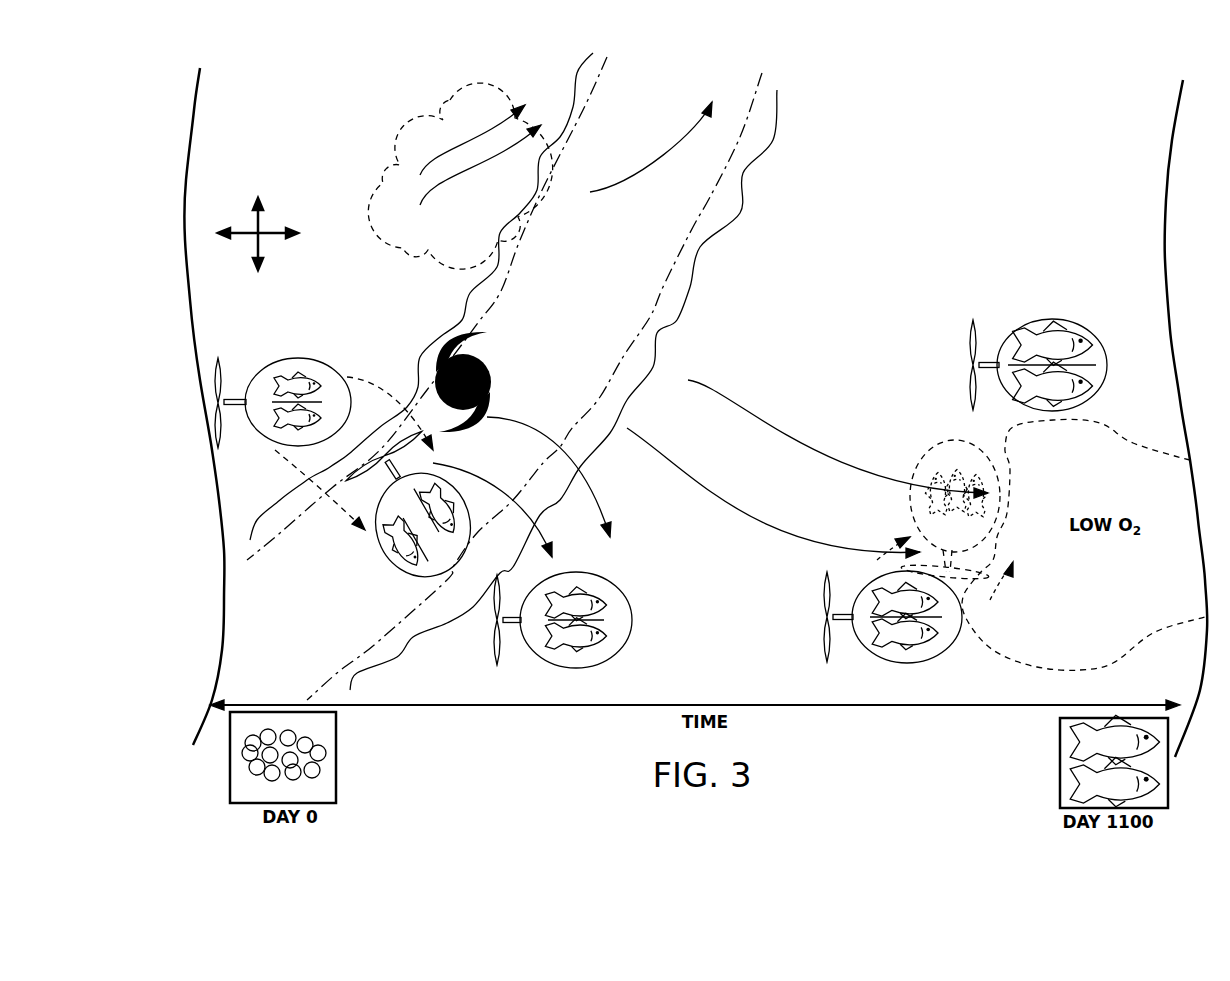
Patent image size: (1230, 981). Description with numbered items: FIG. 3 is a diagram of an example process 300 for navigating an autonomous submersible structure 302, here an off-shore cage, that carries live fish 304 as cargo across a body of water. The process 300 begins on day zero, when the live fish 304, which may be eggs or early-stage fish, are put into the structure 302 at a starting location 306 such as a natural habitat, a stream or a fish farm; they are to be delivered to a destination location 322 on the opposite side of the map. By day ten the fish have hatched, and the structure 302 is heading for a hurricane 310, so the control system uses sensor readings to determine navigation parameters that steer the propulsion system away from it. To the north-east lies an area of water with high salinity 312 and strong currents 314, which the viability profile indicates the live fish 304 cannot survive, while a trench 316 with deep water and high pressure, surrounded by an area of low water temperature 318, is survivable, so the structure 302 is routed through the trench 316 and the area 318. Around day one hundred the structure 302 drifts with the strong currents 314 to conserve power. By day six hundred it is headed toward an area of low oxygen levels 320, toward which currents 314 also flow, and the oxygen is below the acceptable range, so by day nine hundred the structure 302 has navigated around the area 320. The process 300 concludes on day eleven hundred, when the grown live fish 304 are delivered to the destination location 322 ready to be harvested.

The process 300 is at (322, 148).
The structure 302 is at (292, 357).
The live fish 304 is at (320, 417).
The starting location 306 is at (187, 173).
The hurricane 310 is at (490, 378).
The area of water with high salinity 312 is at (452, 98).
The strong currents 314 is at (523, 102).
The trench 316 is at (613, 375).
The area of low water temperature 318 is at (653, 360).
The area of low O2 levels 320 is at (1005, 440).
The destination location 322 is at (1167, 145).